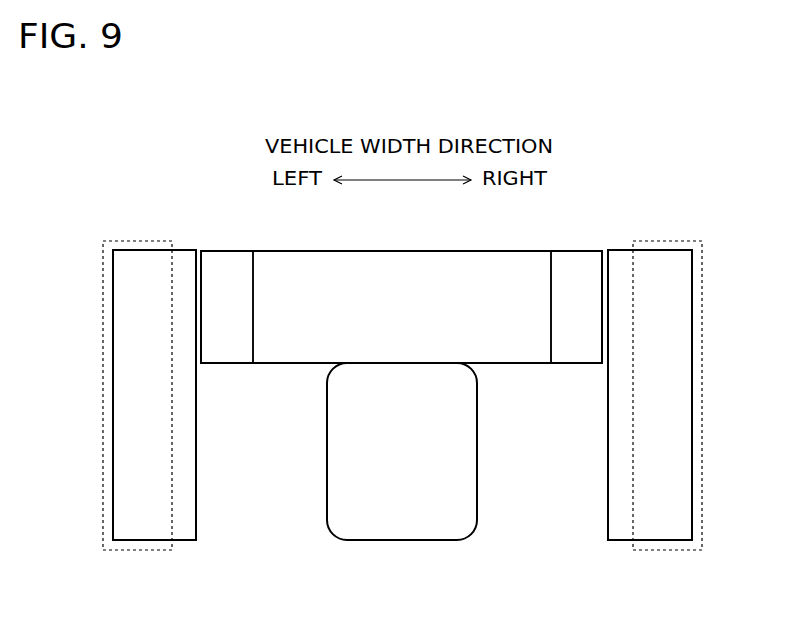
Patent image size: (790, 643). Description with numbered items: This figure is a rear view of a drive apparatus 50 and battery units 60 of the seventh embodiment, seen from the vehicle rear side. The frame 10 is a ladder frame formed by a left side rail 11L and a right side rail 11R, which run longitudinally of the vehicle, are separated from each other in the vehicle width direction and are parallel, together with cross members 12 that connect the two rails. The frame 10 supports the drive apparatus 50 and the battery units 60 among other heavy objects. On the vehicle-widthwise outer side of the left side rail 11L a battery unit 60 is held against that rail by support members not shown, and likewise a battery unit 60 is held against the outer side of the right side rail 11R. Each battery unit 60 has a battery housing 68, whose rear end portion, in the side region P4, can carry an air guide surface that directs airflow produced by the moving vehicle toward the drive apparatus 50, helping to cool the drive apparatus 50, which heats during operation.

The side region P4 is at (132, 241).
The frame 10 is at (405, 284).
The left side rail 11L is at (227, 262).
The right side rail 11R is at (578, 262).
The cross member 12 is at (405, 260).
The drive apparatus 50 is at (405, 520).
The battery unit 60 is at (402, 426).
The battery housing 68 is at (196, 512).